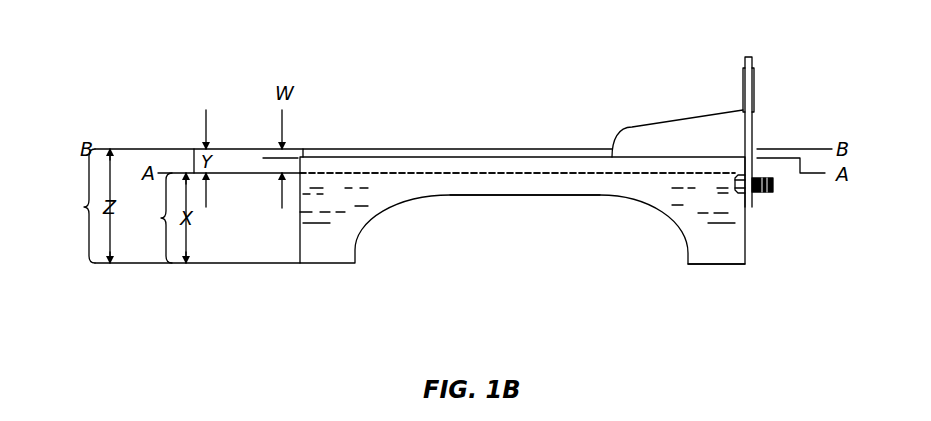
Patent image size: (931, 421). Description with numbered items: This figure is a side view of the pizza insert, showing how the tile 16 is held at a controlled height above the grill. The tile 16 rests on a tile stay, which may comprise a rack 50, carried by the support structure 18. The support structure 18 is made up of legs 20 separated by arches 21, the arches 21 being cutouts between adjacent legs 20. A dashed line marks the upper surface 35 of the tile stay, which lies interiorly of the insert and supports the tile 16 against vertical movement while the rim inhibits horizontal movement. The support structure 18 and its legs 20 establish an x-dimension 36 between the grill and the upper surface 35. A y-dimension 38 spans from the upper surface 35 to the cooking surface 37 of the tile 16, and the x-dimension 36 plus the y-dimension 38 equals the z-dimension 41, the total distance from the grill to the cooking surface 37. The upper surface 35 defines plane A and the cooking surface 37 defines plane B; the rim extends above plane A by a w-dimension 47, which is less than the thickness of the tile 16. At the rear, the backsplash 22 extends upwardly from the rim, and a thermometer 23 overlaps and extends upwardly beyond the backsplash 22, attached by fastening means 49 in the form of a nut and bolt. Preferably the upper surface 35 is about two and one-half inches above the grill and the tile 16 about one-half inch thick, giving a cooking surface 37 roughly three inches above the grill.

The tile 16 is at (543, 148).
The support structure 18 is at (718, 203).
The legs 20 is at (730, 238).
The arches 21 is at (540, 197).
The backsplash 22 is at (693, 128).
The thermometer 23 is at (753, 90).
The upper surface 35 is at (545, 172).
The x-dimension 36 is at (153, 218).
The cooking surface 37 is at (438, 149).
The y-dimension 38 is at (194, 150).
The z-dimension 41 is at (77, 206).
The w-dimension 47 is at (263, 171).
The fastening means 49 is at (768, 208).
The rack 50 is at (545, 172).